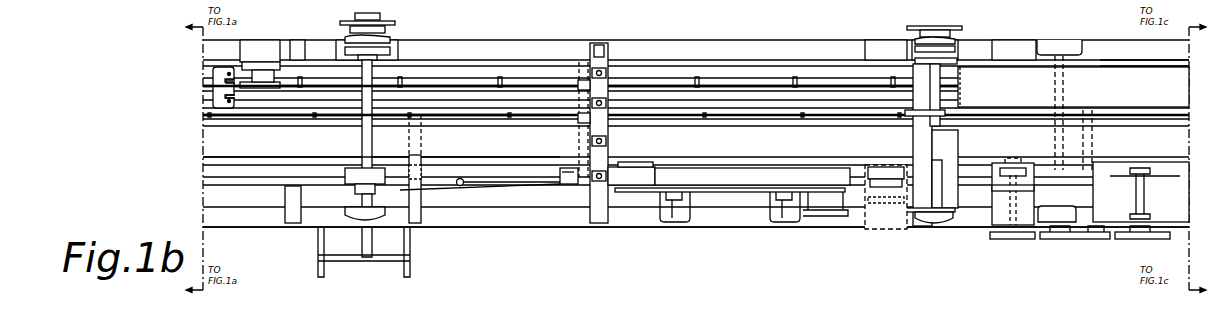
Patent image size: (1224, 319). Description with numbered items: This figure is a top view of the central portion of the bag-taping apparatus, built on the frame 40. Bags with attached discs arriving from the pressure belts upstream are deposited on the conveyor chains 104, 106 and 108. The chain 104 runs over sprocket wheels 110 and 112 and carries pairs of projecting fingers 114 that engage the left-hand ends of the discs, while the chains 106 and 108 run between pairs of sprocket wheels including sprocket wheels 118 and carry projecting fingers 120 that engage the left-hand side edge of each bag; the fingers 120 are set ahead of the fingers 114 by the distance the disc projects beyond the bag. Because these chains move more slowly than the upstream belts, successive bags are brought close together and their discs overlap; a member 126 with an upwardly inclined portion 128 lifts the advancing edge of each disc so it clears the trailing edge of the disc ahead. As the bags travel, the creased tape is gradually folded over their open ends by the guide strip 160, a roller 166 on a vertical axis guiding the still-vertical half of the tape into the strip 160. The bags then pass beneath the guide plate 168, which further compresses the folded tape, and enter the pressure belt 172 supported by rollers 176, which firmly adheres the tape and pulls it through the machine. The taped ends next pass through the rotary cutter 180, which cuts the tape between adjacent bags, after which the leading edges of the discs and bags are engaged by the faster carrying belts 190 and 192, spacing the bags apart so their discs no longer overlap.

The frame 40 is at (543, 227).
The conveyor chain 104 is at (623, 88).
The conveyor chain 106 is at (247, 116).
The conveyor chain 108 is at (287, 159).
The sprocket wheel 110 is at (246, 77).
The sprocket wheel 112 is at (958, 86).
The projecting fingers 114 is at (499, 80).
The sprocket wheels 118 is at (912, 150).
The projecting fingers 120 is at (509, 127).
The member 126 is at (212, 88).
The upwardly inclined portion 128 is at (210, 80).
The guide strip 160 is at (511, 189).
The roller 166 is at (456, 184).
The guide plate 168 is at (575, 186).
The pressure belt 172 is at (737, 162).
The rollers 176 is at (646, 162).
The rotary cutter 180 is at (875, 229).
The carrying belt 190 is at (1106, 74).
The carrying belt 192 is at (960, 158).